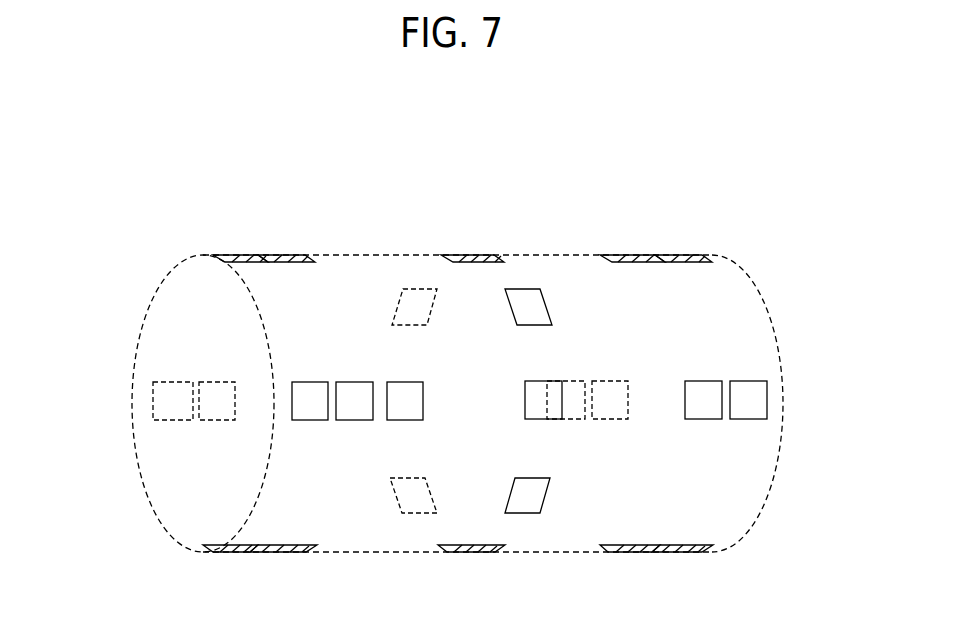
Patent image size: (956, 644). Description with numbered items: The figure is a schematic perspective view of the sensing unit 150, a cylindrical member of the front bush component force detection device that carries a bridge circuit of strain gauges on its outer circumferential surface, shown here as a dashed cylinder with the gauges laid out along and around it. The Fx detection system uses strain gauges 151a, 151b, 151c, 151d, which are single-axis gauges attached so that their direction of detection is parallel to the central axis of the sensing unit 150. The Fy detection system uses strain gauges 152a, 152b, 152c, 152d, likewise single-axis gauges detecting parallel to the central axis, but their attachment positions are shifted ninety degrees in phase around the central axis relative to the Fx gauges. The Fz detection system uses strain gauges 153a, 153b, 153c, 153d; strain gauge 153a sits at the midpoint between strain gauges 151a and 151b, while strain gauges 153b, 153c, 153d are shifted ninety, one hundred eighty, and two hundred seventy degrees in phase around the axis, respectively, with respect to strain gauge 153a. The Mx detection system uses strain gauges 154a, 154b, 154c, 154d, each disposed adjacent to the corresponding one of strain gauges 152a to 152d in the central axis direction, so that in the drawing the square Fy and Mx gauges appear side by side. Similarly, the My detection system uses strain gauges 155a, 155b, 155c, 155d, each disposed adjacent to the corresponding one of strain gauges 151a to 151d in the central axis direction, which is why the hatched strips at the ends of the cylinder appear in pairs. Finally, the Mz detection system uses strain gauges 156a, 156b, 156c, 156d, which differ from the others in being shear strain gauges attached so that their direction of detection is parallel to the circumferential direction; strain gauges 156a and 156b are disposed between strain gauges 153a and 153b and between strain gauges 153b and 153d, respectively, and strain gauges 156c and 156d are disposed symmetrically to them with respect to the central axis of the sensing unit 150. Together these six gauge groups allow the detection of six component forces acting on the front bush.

The sensing unit 150 is at (124, 304).
The strain gauge 151a is at (237, 254).
The strain gauge 151b is at (673, 254).
The strain gauge 151c is at (677, 553).
The strain gauge 151d is at (243, 553).
The strain gauge 152a is at (297, 388).
The strain gauge 152b is at (745, 391).
The strain gauge 152c is at (628, 385).
The strain gauge 152d is at (153, 412).
The strain gauge 153a is at (473, 254).
The strain gauge 153b is at (553, 381).
The strain gauge 153c is at (397, 381).
The strain gauge 153d is at (470, 553).
The strain gauge 154a is at (352, 421).
The strain gauge 154b is at (697, 420).
The strain gauge 154c is at (590, 380).
The strain gauge 154d is at (199, 420).
The strain gauge 155a is at (287, 254).
The strain gauge 155b is at (638, 254).
The strain gauge 155c is at (632, 553).
The strain gauge 155d is at (285, 553).
The strain gauge 156a is at (528, 289).
The strain gauge 156b is at (527, 514).
The strain gauge 156c is at (415, 288).
The strain gauge 156d is at (405, 514).